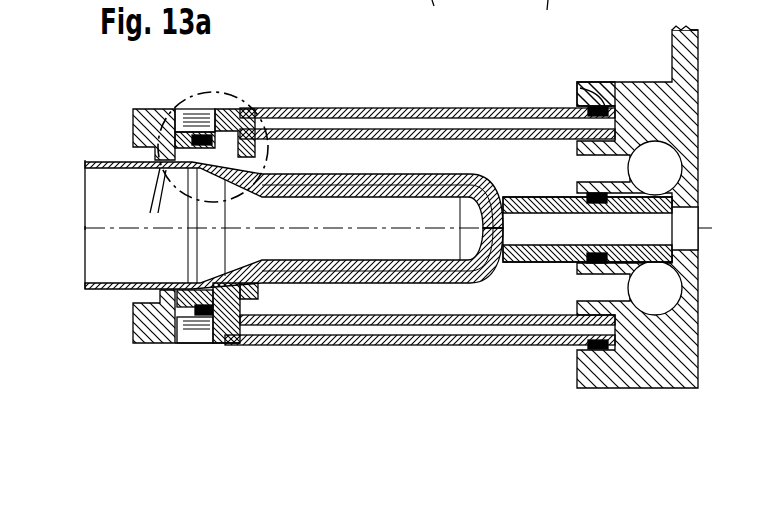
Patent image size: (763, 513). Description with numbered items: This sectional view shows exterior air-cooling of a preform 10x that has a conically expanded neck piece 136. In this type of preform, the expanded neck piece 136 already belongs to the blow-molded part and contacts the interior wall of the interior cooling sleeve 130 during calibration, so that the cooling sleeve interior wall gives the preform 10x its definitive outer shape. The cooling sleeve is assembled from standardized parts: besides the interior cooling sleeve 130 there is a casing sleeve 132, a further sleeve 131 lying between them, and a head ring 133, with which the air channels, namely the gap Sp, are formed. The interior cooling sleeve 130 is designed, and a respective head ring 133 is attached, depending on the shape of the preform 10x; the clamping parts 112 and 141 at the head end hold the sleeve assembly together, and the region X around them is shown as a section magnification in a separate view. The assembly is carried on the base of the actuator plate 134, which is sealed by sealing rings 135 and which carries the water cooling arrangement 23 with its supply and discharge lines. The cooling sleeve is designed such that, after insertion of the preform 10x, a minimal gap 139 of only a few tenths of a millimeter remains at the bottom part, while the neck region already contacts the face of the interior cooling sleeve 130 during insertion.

The preform 10x is at (374, 188).
The water cooling arrangement 23 is at (672, 170).
The clamping sleeve 112 is at (193, 108).
The interior cooling sleeve 130 is at (437, 282).
The inner tube 131 is at (378, 318).
The casing sleeve 132 is at (290, 347).
The head ring 133 is at (168, 347).
The base of the actuator plate 134 is at (598, 370).
The retaining ring 135 is at (578, 90).
The conically expanded neck piece 136 is at (490, 8).
The minimal gap 139 is at (508, 197).
The clamping ring 141 is at (262, 168).
The section magnification region X is at (213, 133).
The gap Sp is at (178, 216).